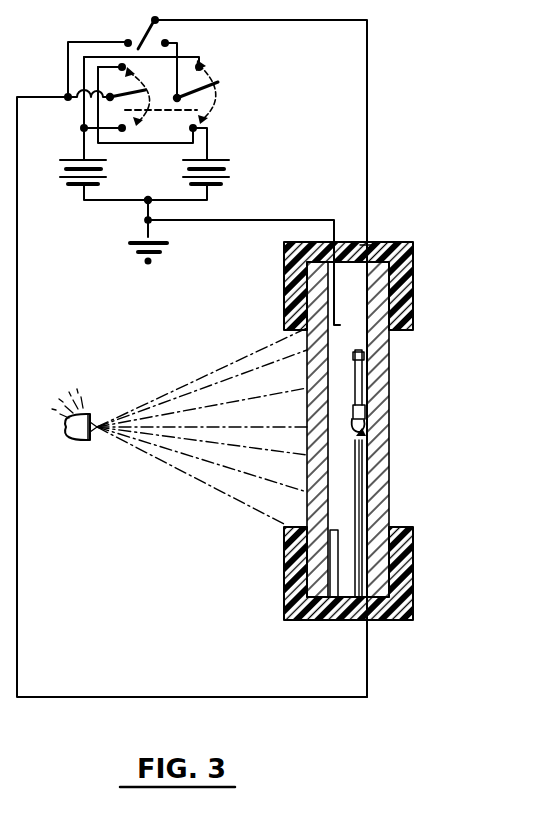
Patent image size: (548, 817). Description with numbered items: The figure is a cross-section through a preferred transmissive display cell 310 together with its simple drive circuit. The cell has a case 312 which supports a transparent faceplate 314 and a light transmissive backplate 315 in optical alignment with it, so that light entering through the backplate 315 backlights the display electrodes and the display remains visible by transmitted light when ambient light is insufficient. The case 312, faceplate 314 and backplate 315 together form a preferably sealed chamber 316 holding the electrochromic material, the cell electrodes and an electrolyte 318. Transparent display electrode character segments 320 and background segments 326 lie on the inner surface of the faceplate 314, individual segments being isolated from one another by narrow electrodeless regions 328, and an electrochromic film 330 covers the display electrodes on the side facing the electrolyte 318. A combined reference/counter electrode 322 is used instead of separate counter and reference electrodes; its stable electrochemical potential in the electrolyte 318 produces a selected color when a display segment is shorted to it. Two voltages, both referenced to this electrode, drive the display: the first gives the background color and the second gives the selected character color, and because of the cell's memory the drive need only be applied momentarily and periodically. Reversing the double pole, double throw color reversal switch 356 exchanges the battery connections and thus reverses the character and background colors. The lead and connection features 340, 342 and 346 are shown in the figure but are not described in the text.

The transmissive display cell 310 is at (377, 453).
The case 312 is at (414, 249).
The transparent faceplate 314 is at (389, 509).
The light transmissive backplate 315 is at (310, 463).
The sealed chamber 316 is at (314, 492).
The electrolyte 318 is at (343, 402).
The display electrode character segments 320 is at (362, 374).
The combined reference/counter electrode 322 is at (333, 618).
The background segments 326 is at (366, 493).
The narrow electrodeless regions 328 is at (362, 410).
The electrochromic film 330 is at (356, 366).
The electrode connection 340 is at (368, 246).
The ground wire 342 is at (337, 238).
The lead wire 346 is at (378, 661).
The double pole, double throw color reversal switch 356 is at (220, 103).